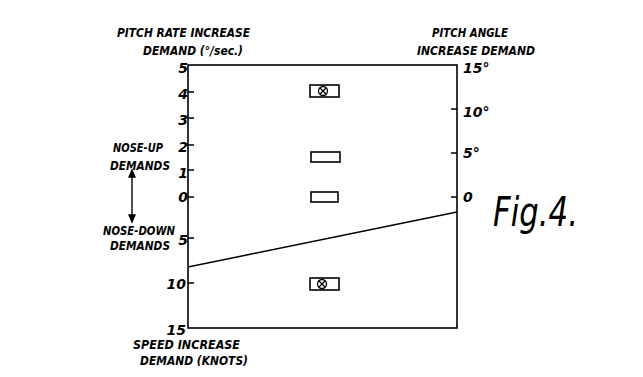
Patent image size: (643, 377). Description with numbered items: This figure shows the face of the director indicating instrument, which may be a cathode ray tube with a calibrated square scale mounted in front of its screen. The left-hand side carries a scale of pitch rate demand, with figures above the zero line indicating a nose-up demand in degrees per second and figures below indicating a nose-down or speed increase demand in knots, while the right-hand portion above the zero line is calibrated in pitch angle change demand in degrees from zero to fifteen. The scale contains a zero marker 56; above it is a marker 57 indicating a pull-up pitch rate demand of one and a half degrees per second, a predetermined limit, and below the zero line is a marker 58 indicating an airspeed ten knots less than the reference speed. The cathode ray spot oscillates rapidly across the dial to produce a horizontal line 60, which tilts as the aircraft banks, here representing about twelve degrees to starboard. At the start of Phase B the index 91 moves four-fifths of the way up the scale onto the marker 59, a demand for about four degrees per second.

The zero marker 56 is at (339, 195).
The marker 57 is at (341, 155).
The marker 58 is at (333, 279).
The marker 59 is at (341, 89).
The line 60 is at (402, 223).
The index 91 is at (318, 91).